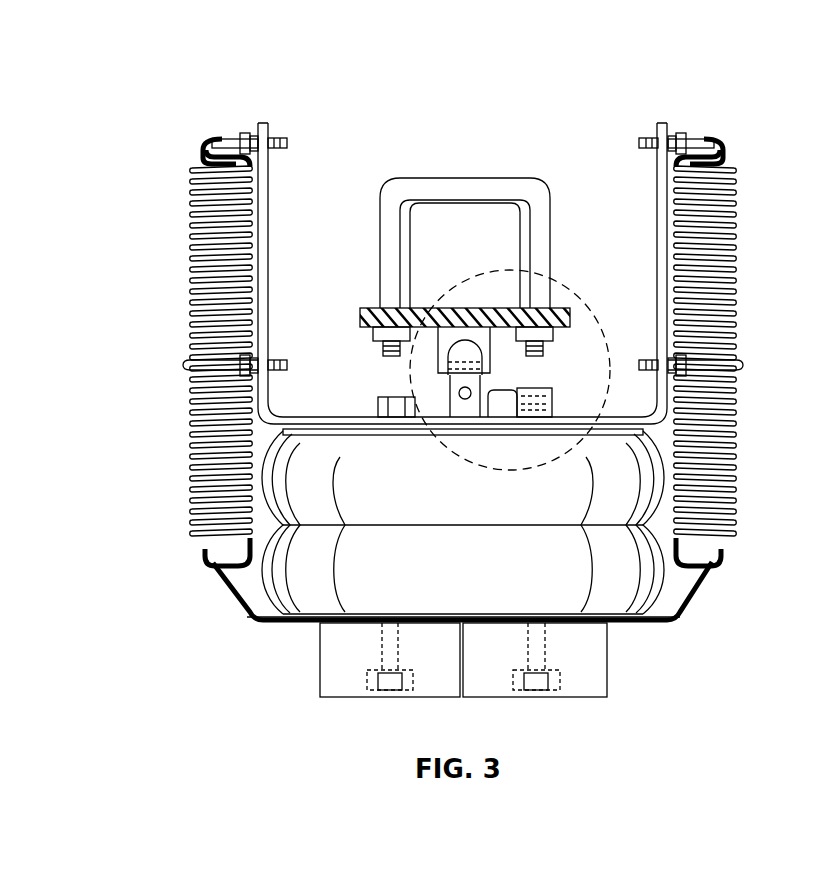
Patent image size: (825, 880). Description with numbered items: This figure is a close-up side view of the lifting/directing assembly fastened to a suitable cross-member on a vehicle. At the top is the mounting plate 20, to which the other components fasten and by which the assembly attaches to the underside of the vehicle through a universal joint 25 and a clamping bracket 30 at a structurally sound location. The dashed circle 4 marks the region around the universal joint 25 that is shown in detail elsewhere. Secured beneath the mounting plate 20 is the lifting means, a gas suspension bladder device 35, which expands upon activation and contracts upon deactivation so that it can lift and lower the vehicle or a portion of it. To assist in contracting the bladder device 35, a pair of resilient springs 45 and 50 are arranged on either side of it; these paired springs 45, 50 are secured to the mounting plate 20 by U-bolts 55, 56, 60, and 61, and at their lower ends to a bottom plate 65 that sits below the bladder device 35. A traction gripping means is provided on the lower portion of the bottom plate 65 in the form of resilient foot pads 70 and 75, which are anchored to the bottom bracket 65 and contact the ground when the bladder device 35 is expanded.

The close-up view region 4 is at (584, 276).
The mounting plate 20 is at (370, 415).
The universal joint 25 is at (463, 410).
The clamping bracket 30 is at (481, 178).
The gas suspension bladder device 35 is at (289, 606).
The spring 45 is at (737, 243).
The spring 50 is at (199, 242).
The U-bolt 55 is at (745, 366).
The U-bolt 56 is at (688, 137).
The U-bolt 60 is at (195, 365).
The U-bolt 61 is at (240, 134).
The bottom plate 65 is at (658, 625).
The resilient foot pad 70 is at (343, 686).
The resilient foot pad 75 is at (585, 688).